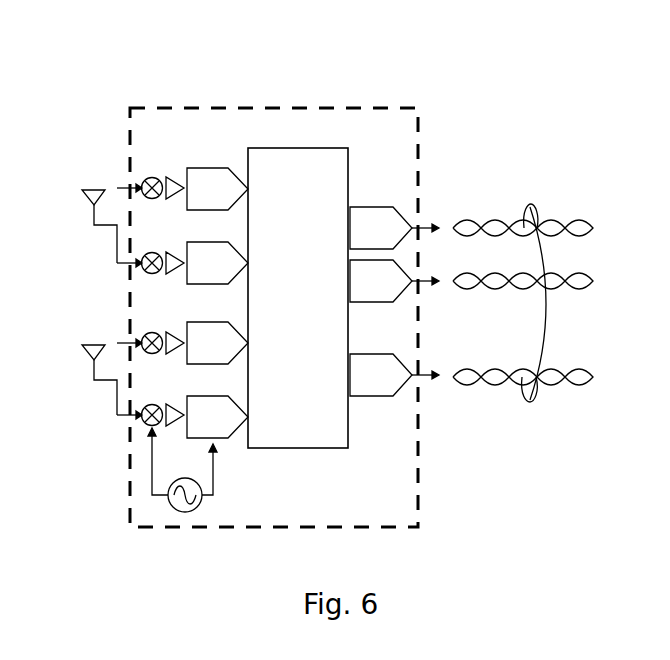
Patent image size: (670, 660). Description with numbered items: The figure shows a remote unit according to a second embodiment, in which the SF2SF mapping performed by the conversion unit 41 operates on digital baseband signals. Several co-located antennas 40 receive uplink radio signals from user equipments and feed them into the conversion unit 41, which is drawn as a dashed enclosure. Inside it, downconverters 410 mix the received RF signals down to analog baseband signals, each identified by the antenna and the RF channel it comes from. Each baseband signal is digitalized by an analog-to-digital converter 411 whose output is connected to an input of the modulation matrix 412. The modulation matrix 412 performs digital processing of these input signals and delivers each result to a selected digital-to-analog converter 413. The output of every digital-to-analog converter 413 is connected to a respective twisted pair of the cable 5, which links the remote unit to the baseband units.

The cable 5 is at (562, 198).
The antenna 40 is at (56, 186).
The conversion unit 41 is at (337, 107).
The downconverter 410 is at (150, 157).
The analog-to-digital converter 411 is at (199, 171).
The modulation matrix 412 is at (299, 148).
The digital-to-analog converter 413 is at (378, 212).